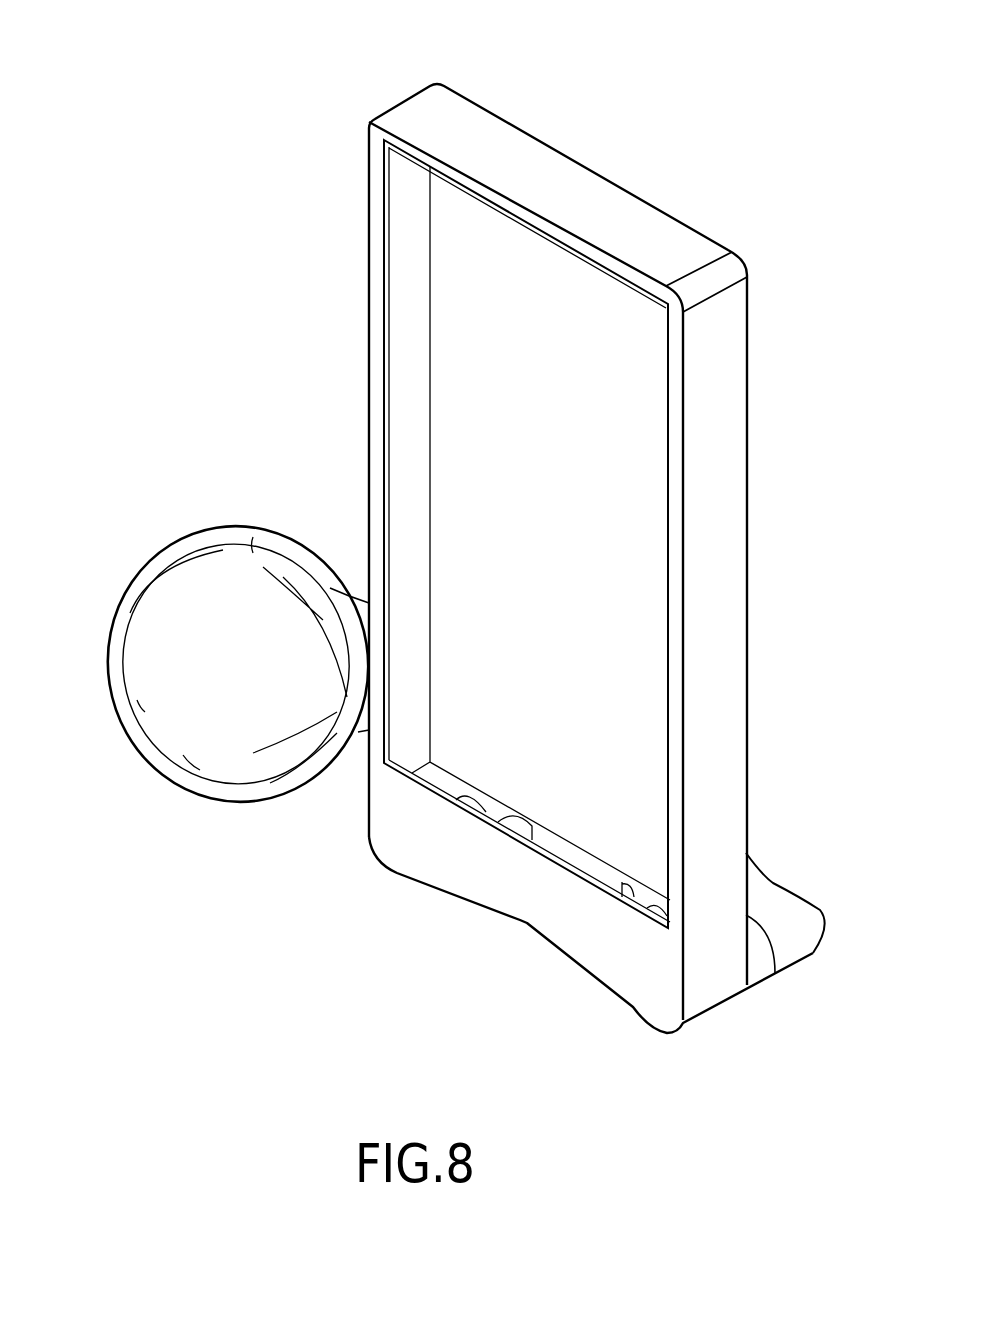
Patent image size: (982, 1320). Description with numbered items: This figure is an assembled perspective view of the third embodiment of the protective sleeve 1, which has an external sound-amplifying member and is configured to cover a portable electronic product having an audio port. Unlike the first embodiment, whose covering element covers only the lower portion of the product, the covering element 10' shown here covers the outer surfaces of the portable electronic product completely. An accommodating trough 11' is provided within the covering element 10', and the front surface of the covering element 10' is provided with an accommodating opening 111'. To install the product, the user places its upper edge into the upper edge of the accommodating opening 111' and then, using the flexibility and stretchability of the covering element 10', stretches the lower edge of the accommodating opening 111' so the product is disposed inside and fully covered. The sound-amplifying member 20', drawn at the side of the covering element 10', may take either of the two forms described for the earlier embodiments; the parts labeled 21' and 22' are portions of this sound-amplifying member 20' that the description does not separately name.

The protective sleeve 1 is at (612, 43).
The covering element 10' is at (597, 577).
The accommodating trough 11' is at (456, 534).
The accommodating opening 111' is at (436, 534).
The sound-amplifying member 20' is at (238, 618).
The foot 21' is at (794, 980).
The inner surface of ring 22' is at (236, 643).